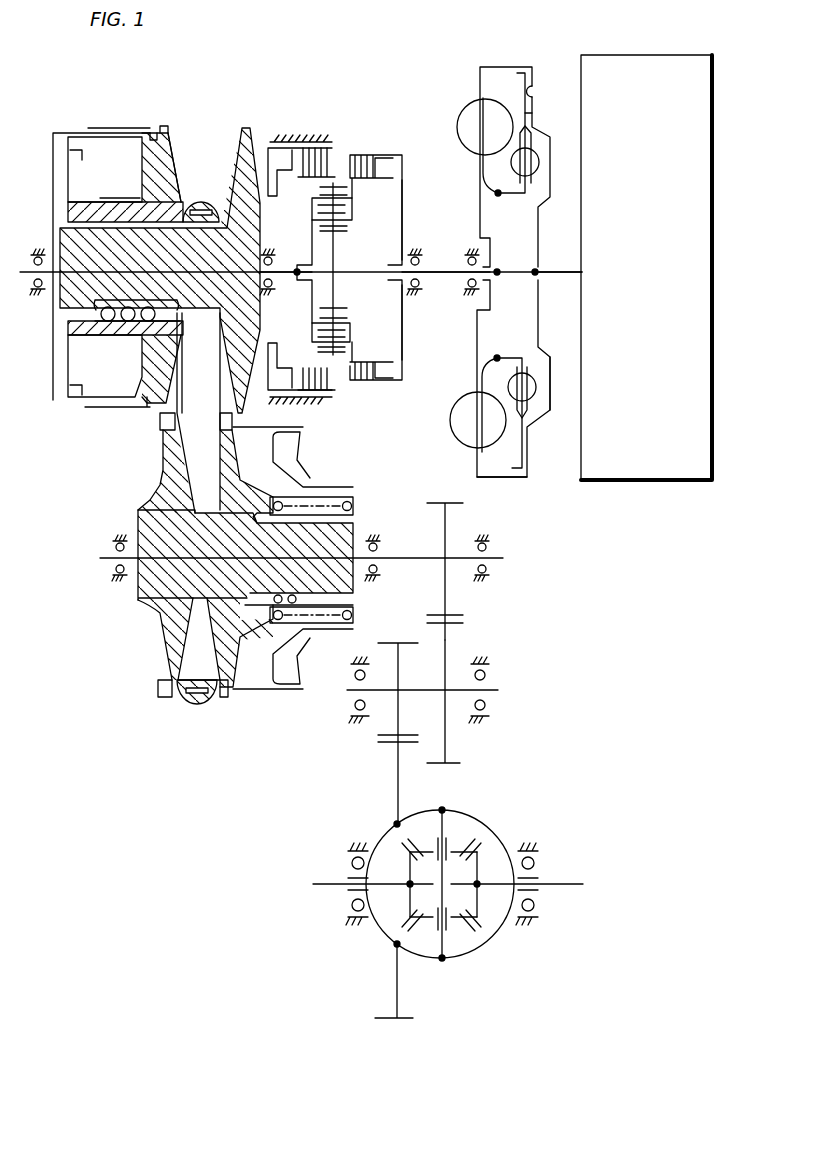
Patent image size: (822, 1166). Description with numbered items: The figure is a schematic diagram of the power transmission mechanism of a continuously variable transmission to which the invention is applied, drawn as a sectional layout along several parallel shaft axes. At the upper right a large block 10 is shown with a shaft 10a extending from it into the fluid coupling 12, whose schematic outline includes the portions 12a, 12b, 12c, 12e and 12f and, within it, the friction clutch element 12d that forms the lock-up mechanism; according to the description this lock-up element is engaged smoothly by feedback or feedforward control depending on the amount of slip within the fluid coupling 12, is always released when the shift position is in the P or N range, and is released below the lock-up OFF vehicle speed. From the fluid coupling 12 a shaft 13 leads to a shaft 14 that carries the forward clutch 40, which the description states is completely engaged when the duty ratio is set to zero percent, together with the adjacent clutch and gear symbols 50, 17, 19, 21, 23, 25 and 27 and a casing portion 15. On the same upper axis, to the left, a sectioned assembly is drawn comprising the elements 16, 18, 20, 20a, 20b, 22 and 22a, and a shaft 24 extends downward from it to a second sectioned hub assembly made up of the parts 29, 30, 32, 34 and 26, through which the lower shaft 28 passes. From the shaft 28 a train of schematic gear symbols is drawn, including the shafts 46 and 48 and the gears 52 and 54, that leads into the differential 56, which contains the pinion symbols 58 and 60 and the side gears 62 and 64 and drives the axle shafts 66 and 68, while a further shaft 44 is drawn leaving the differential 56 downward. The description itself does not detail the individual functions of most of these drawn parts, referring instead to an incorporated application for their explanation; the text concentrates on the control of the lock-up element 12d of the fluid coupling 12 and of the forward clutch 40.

The engine 10 is at (653, 55).
The engine output shaft 10a is at (558, 277).
The fluid coupling 12 is at (508, 68).
The torque converter pump impeller 12a is at (523, 337).
The turbine runner 12b is at (451, 423).
The stator 12c is at (522, 468).
The friction clutch element 12d is at (533, 113).
The torque converter casing 12e is at (534, 82).
The torque converter cover 12f is at (518, 477).
The input shaft 13 is at (445, 277).
The intermediate shaft 14 is at (285, 277).
The transmission casing 15 is at (307, 124).
The flywheel 16 is at (246, 114).
The clutch drum 17 is at (368, 218).
The seal ring 18 is at (250, 133).
The planetary gear set 19 is at (333, 290).
The electromagnetic clutch coil 20 is at (87, 157).
The lower clutch coil 20a is at (57, 397).
The clutch yoke 20b is at (135, 140).
The sun gear 21 is at (340, 317).
The clutch armature 22 is at (167, 132).
The armature face 22a is at (172, 146).
The ring gear 23 is at (340, 352).
The drive shaft 24 is at (177, 398).
The pinion carrier 25 is at (312, 310).
The bearing 26 is at (181, 712).
The brake 27 is at (337, 357).
The output shaft 28 is at (413, 567).
The pulley hub 29 is at (152, 490).
The pulley flange 30 is at (170, 633).
The bearing housing 32 is at (252, 672).
The pulley flange 34 is at (223, 677).
The forward clutch 40 is at (376, 155).
The output shaft 44 is at (407, 1018).
The gear shaft 46 is at (442, 503).
The gear shaft 48 is at (443, 727).
The clutch plates 50 is at (340, 154).
The gear 52 is at (457, 690).
The gear 54 is at (395, 715).
The differential 56 is at (509, 824).
The differential pinion 58 is at (463, 920).
The differential pinion 60 is at (427, 847).
The side gear 62 is at (410, 897).
The side gear 64 is at (480, 863).
The axle shaft 66 is at (323, 884).
The axle shaft 68 is at (577, 887).